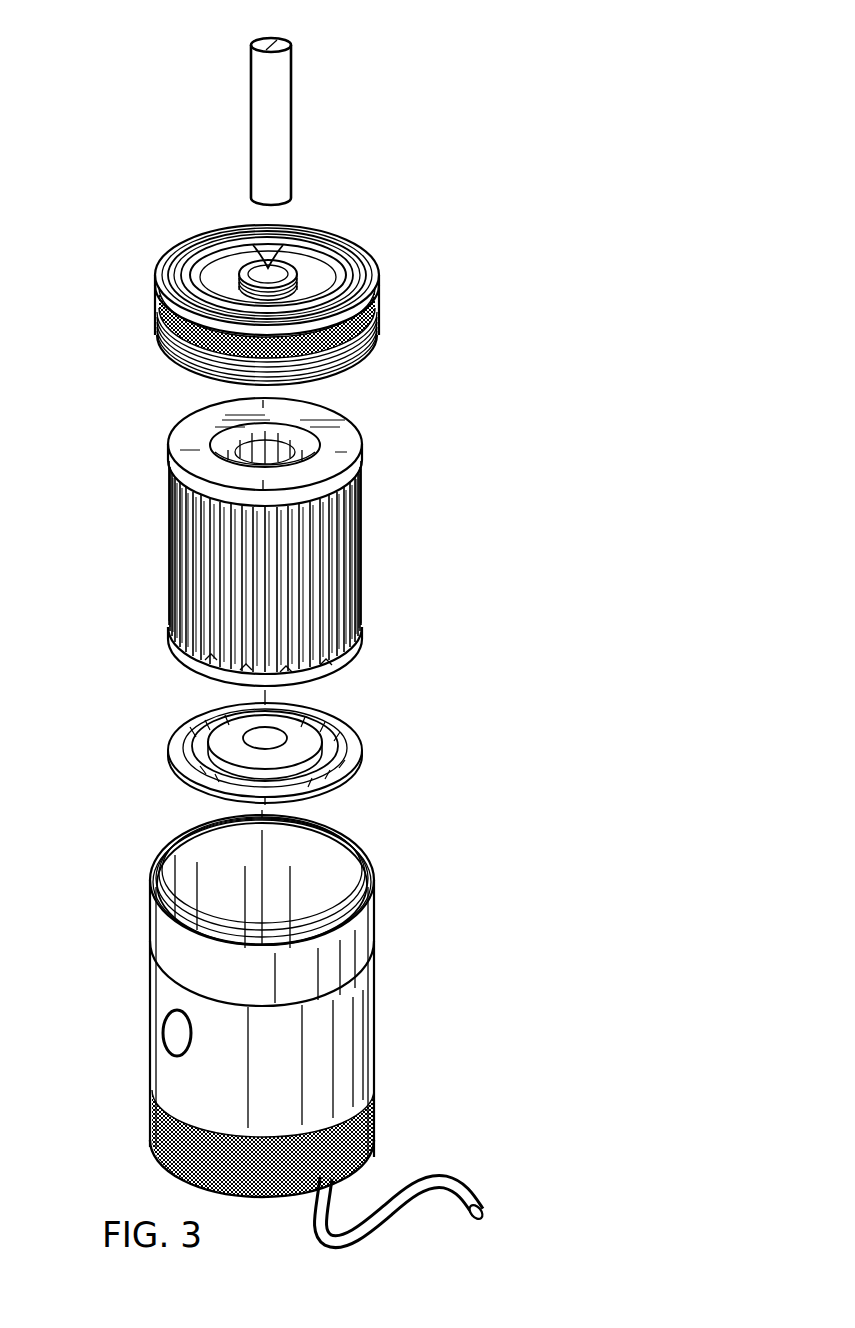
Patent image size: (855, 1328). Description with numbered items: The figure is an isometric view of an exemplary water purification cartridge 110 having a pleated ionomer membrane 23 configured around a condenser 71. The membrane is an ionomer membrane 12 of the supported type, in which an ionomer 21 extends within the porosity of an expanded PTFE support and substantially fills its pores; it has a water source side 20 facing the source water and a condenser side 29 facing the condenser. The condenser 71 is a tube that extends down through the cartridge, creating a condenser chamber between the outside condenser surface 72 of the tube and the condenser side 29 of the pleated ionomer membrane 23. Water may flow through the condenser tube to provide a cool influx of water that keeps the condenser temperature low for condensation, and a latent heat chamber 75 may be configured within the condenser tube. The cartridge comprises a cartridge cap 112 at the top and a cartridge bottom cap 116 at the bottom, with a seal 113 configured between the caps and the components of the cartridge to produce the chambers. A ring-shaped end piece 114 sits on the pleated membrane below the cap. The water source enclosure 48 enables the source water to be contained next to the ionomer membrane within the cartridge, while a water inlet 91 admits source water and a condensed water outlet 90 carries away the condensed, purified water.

The ionomer membrane 12 is at (113, 158).
The water purification cartridge 110 is at (446, 352).
The condenser 71 is at (280, 95).
The condenser surface 72 is at (276, 155).
The latent heat chamber 75 is at (275, 50).
The cartridge cap 112 is at (168, 272).
The seal 113 is at (206, 357).
The upper end cap 114 is at (340, 435).
The condenser side 29 is at (236, 459).
The pleated ionomer membrane 23 is at (366, 483).
The ionomer 21 is at (322, 553).
The water source side 20 is at (346, 584).
The cartridge bottom cap 116 is at (298, 740).
The water source enclosure 48 is at (372, 1012).
The water inlet 91 is at (163, 1030).
The condensed water outlet 90 is at (434, 1184).